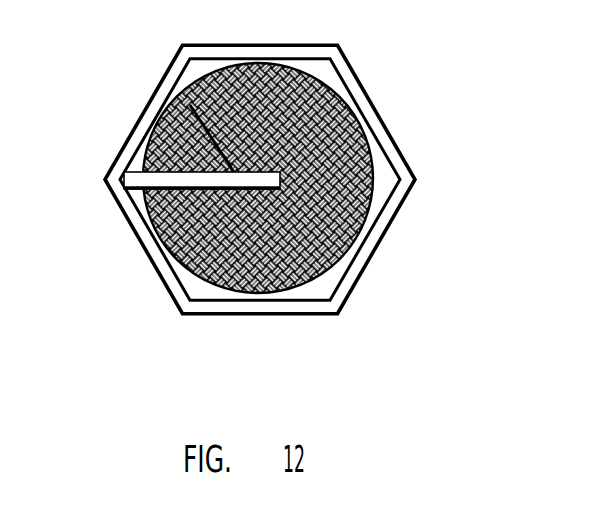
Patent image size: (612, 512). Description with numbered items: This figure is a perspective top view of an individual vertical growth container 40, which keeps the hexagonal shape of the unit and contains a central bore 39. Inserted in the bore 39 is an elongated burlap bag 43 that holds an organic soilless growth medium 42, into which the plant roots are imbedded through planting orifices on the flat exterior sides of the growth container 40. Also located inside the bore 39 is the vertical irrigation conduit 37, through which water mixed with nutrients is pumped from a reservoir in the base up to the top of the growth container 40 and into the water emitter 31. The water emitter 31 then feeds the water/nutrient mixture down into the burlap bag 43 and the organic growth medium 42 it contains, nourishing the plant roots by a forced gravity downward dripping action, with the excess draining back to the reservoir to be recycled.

The water emitter 31 is at (178, 95).
The vertical irrigation conduit 37 is at (122, 181).
The bore 39 is at (322, 292).
The individual growth container 40 is at (223, 317).
The organic soilless growth medium 42 is at (358, 232).
The elongated burlap bag 43 is at (300, 72).